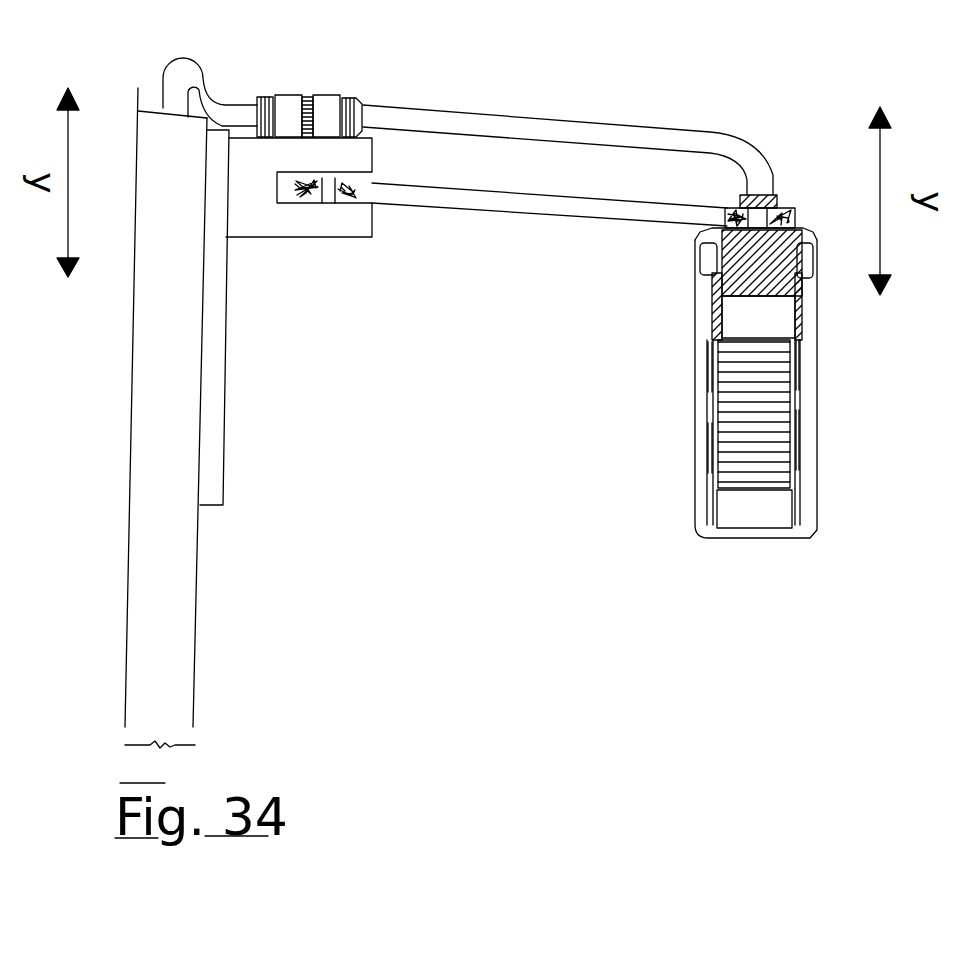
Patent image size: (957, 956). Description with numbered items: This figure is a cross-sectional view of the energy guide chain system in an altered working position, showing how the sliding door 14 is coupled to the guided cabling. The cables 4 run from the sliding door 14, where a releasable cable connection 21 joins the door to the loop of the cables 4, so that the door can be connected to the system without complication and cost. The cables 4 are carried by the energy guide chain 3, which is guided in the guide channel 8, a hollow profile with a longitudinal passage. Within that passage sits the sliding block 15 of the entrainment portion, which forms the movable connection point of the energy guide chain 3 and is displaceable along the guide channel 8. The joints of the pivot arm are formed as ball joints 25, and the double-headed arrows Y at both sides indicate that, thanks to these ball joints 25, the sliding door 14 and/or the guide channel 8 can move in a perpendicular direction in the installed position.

The energy guide chain 3 is at (735, 402).
The cables 4 is at (553, 127).
The guide channel 8 is at (717, 482).
The sliding door 14 is at (182, 632).
The sliding block 15 is at (713, 282).
The releasable cable connection 21 is at (323, 103).
The ball joints 25 is at (717, 232).